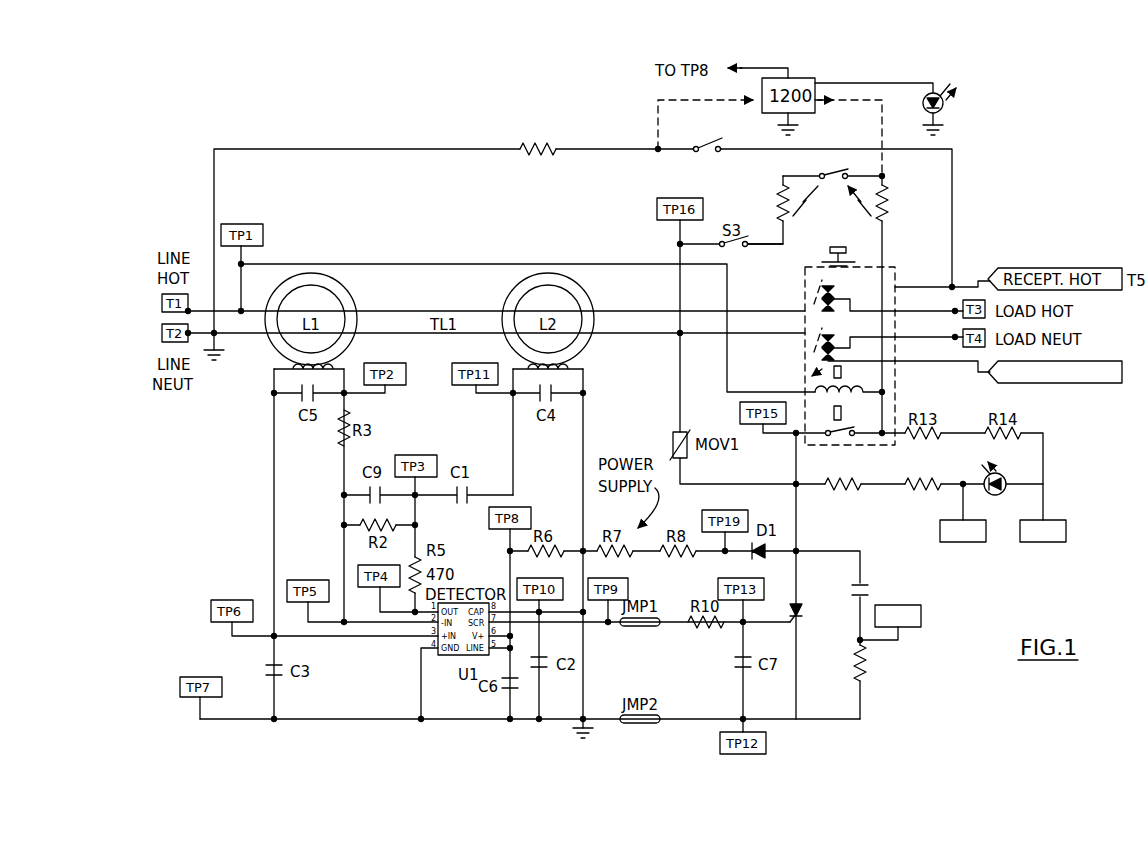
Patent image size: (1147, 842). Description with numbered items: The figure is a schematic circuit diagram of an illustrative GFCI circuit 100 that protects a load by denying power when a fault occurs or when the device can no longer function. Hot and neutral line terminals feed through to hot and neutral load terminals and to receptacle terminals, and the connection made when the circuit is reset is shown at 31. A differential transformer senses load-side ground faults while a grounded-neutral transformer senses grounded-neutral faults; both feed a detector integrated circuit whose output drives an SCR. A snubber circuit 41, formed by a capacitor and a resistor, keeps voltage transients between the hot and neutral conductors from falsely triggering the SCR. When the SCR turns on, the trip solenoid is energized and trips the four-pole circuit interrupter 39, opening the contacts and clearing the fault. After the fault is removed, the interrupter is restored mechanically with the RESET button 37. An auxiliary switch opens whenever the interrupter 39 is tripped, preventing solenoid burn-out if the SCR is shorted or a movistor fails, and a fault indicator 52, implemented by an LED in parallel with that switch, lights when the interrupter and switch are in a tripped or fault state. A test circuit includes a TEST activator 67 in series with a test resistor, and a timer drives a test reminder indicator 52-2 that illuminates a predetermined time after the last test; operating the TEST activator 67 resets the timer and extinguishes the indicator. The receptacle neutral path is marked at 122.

The GFCI circuit 100 is at (185, 205).
The TEST activator 67 is at (706, 163).
The RESET button 37 is at (833, 292).
The reset state connection 31 is at (838, 335).
The four-pole circuit interrupter 39 is at (806, 292).
The snubber circuit 41 is at (856, 624).
The fault indicator 52 is at (1004, 545).
The test reminder indicator 52-2 is at (946, 104).
The receptacle neutral terminal 122 is at (987, 374).